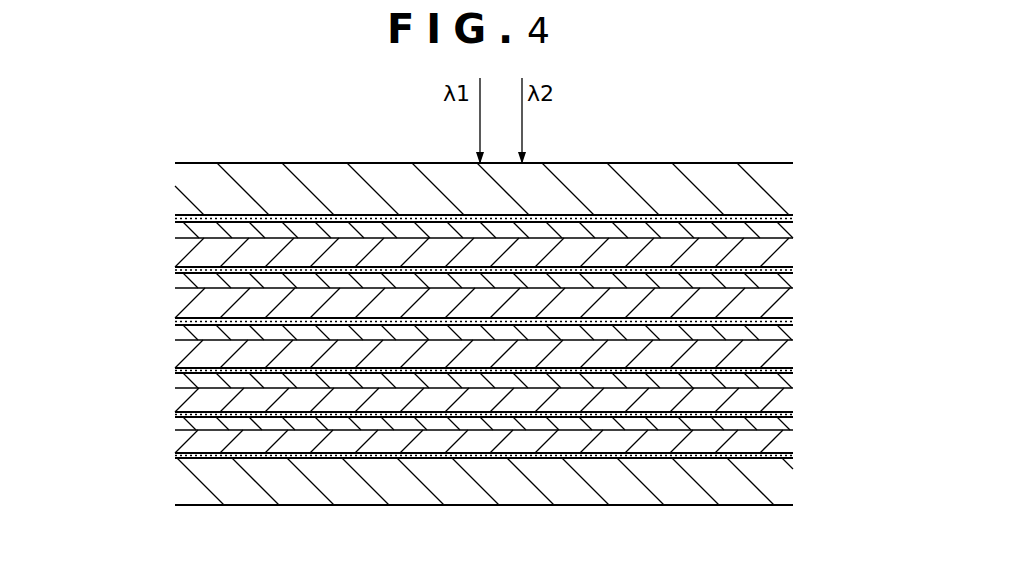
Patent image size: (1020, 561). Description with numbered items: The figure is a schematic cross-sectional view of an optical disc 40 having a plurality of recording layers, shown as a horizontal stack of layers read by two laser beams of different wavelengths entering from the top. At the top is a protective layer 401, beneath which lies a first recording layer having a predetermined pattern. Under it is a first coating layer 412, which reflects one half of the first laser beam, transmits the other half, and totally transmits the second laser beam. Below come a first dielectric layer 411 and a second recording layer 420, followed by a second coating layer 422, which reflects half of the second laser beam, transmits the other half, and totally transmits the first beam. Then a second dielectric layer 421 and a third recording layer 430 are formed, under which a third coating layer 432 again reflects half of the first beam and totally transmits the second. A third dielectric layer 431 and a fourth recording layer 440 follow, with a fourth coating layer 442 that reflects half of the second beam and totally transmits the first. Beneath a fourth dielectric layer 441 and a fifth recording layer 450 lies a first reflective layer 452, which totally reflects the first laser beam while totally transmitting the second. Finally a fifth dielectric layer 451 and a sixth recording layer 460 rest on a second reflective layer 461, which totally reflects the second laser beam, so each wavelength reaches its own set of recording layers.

The optical disc 40 is at (238, 143).
The protective layer 401 is at (177, 187).
The first dielectric layer 411 is at (783, 252).
The first coating layer 412 is at (792, 230).
The second recording layer 420 is at (175, 270).
The second dielectric layer 421 is at (785, 308).
The second coating layer 422 is at (785, 282).
The third recording layer 430 is at (172, 320).
The third dielectric layer 431 is at (783, 355).
The third coating layer 432 is at (790, 333).
The fourth recording layer 440 is at (172, 372).
The fourth dielectric layer 441 is at (790, 398).
The fourth coating layer 442 is at (790, 380).
The fifth recording layer 450 is at (170, 413).
The fifth dielectric layer 451 is at (790, 447).
The first reflective layer 452 is at (790, 425).
The sixth recording layer 460 is at (170, 455).
The second reflective layer 461 is at (168, 490).